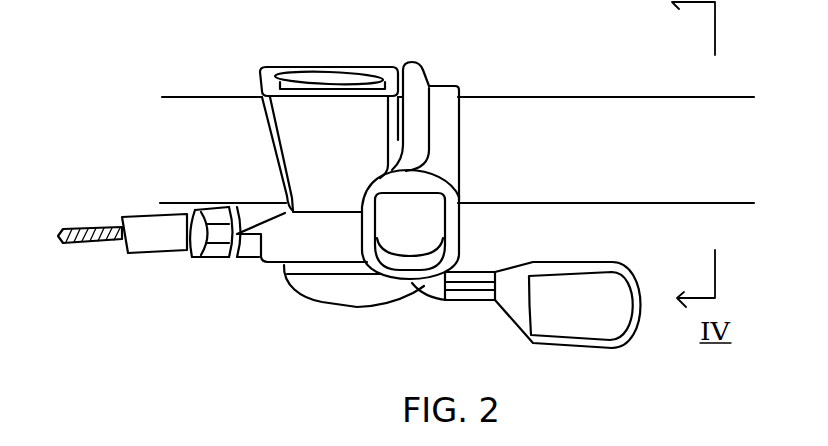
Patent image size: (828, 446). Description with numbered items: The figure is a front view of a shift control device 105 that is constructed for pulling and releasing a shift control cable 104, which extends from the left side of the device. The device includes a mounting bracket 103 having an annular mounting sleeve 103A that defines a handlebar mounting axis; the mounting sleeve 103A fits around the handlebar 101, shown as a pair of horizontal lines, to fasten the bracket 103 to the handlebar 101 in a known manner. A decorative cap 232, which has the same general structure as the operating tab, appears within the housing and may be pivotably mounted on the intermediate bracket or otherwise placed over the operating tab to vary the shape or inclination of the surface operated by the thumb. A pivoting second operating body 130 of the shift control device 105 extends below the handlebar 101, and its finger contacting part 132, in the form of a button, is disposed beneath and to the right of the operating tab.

The handlebar 101 is at (638, 105).
The mounting bracket 103 is at (250, 256).
The annular mounting sleeve 103A is at (455, 86).
The shift control cable 104 is at (92, 230).
The shift control device 105 is at (233, 63).
The second operating body 130 is at (460, 308).
The finger contacting part 132 is at (592, 332).
The decorative cap 232 is at (437, 226).